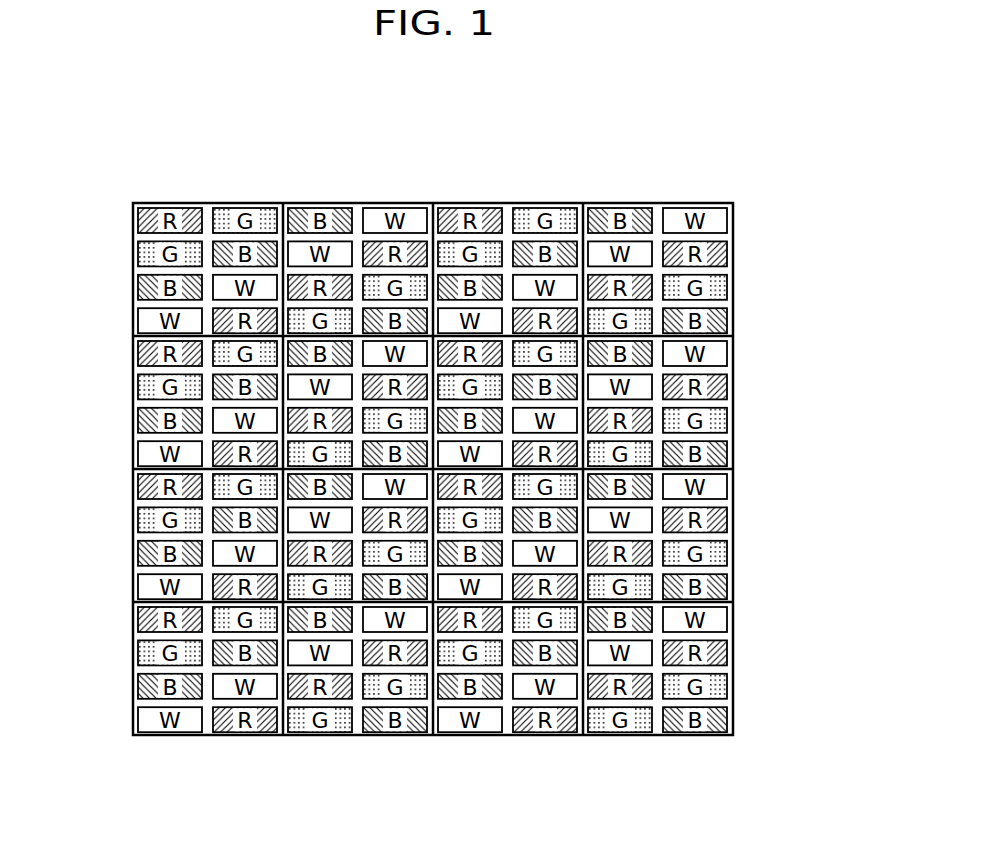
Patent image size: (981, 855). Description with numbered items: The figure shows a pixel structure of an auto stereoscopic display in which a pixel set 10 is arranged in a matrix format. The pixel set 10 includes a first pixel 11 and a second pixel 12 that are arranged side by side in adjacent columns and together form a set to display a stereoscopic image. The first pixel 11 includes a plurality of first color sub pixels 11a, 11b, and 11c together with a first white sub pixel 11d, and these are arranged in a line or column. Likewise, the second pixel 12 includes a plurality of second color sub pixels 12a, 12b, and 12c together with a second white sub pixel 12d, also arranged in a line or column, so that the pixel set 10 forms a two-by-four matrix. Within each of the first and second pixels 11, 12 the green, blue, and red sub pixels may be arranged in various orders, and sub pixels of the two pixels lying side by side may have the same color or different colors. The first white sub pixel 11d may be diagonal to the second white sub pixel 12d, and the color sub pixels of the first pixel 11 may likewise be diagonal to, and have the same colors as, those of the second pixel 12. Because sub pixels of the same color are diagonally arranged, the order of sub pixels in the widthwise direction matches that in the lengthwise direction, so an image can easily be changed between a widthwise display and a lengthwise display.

The pixel set 10 is at (162, 190).
The first pixel 11 is at (66, 214).
The first color sub pixel 11a is at (138, 219).
The first color sub pixel 11b is at (138, 253).
The first color sub pixel 11c is at (138, 286).
The first white sub pixel 11d is at (138, 319).
The second pixel 12 is at (283, 163).
The second color sub pixel 12a is at (277, 219).
The second color sub pixel 12b is at (277, 253).
The second color sub pixel 12c is at (277, 321).
The second white sub pixel 12d is at (277, 287).